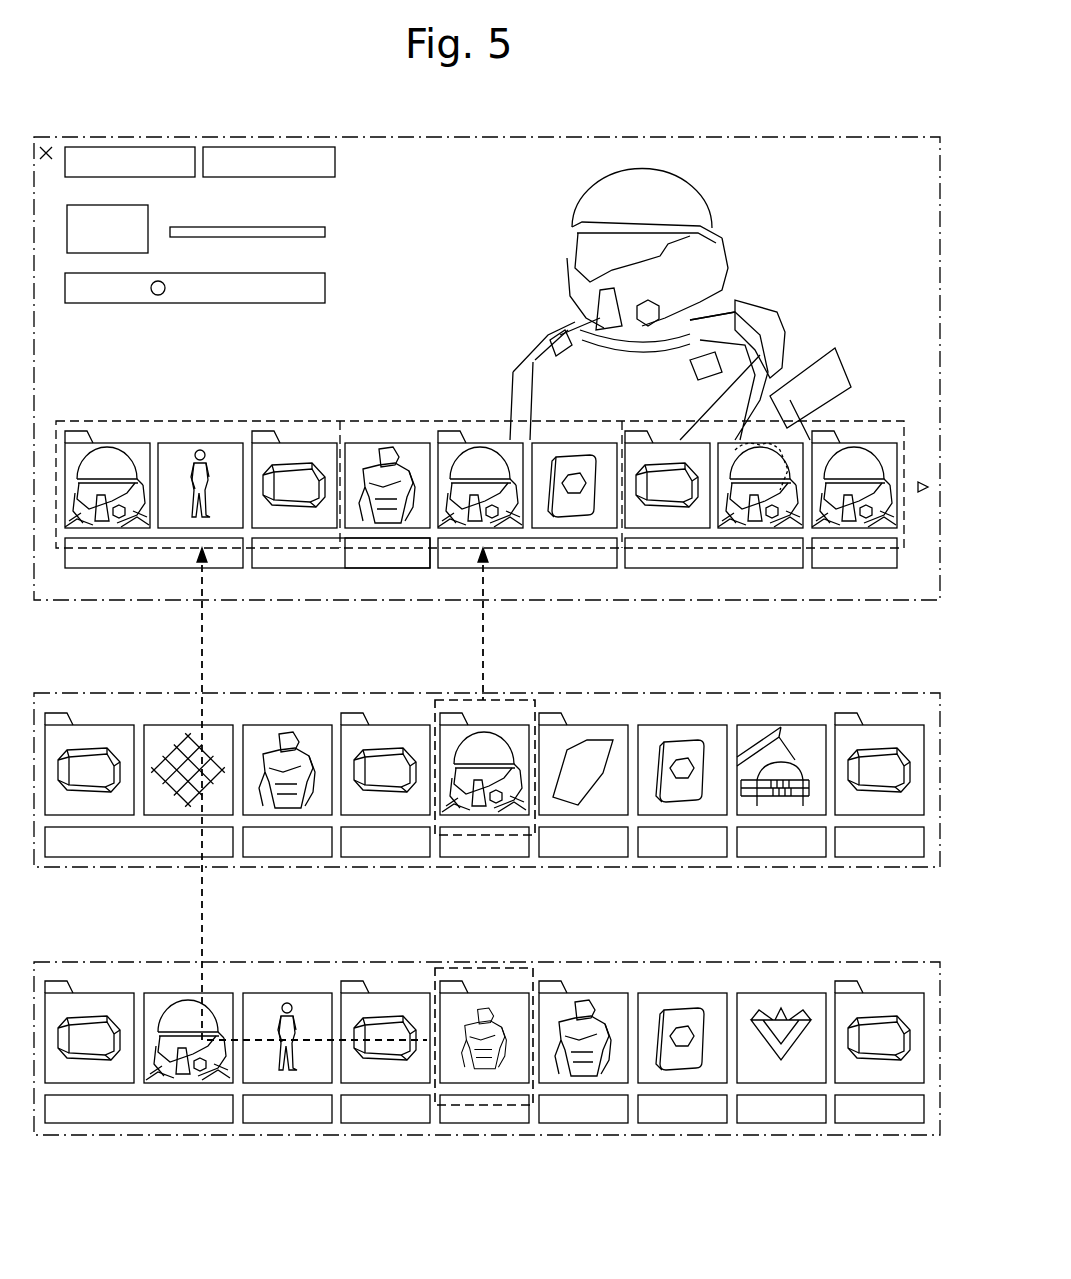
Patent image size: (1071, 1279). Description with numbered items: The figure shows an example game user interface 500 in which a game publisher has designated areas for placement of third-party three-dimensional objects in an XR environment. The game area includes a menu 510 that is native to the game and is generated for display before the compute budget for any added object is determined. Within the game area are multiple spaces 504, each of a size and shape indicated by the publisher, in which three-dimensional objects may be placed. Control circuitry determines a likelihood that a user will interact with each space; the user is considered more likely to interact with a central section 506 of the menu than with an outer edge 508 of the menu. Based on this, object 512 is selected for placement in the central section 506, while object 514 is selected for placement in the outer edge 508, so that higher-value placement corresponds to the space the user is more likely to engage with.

The battle pass user interface 500 is at (748, 103).
The spaces 504 is at (170, 524).
The central section 506 is at (402, 550).
The outer edge 508 is at (92, 522).
The menu 510 is at (212, 421).
The object 512 is at (507, 733).
The object 514 is at (513, 1000).